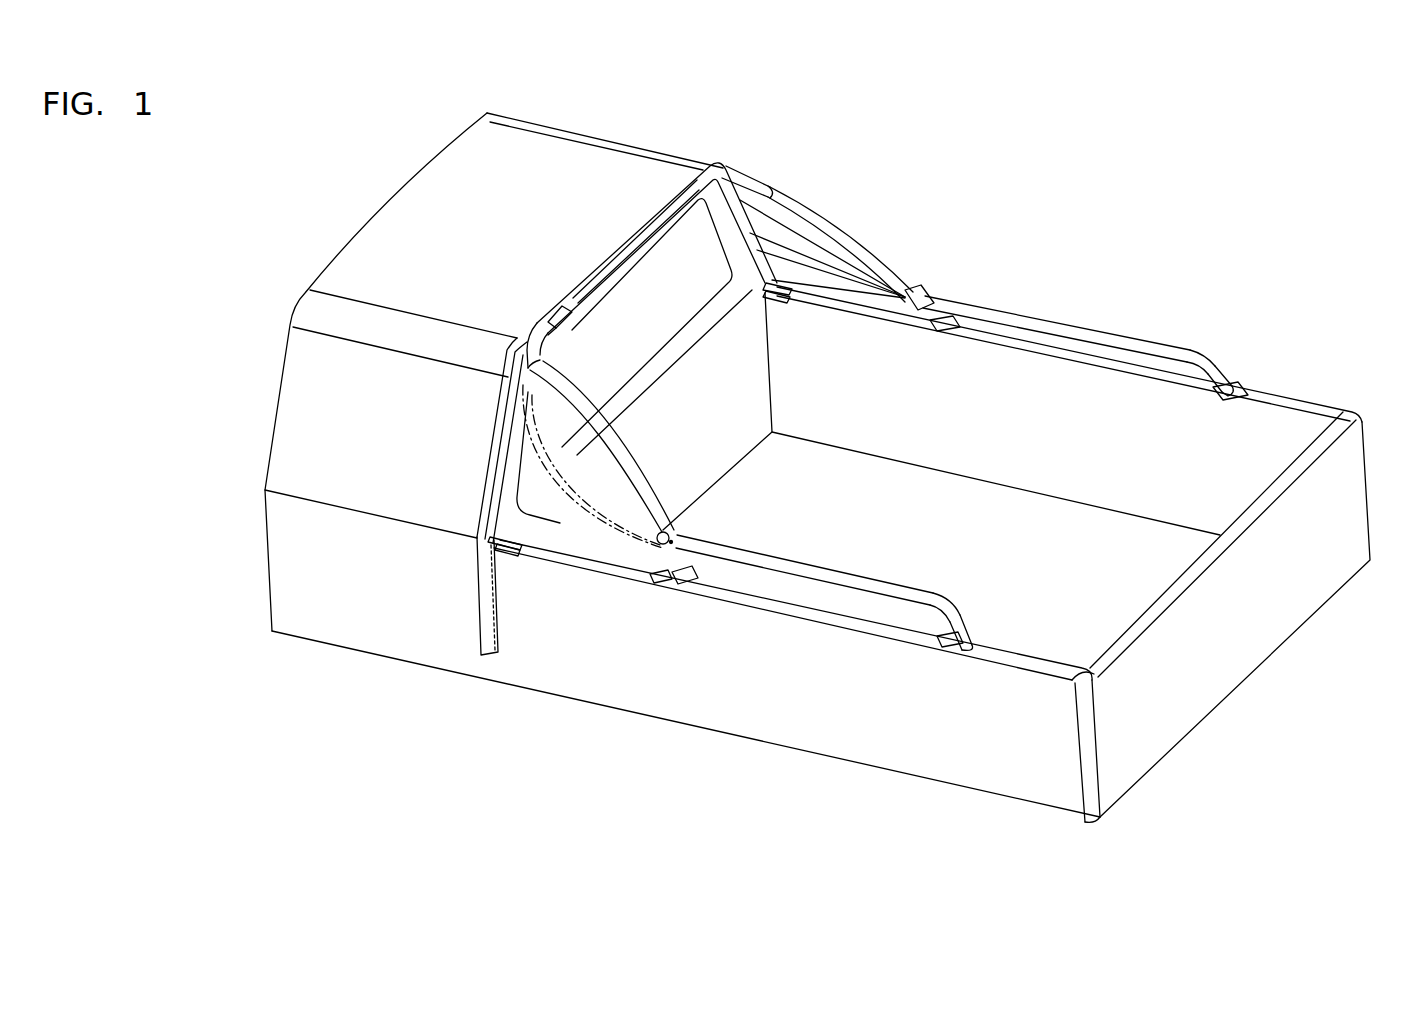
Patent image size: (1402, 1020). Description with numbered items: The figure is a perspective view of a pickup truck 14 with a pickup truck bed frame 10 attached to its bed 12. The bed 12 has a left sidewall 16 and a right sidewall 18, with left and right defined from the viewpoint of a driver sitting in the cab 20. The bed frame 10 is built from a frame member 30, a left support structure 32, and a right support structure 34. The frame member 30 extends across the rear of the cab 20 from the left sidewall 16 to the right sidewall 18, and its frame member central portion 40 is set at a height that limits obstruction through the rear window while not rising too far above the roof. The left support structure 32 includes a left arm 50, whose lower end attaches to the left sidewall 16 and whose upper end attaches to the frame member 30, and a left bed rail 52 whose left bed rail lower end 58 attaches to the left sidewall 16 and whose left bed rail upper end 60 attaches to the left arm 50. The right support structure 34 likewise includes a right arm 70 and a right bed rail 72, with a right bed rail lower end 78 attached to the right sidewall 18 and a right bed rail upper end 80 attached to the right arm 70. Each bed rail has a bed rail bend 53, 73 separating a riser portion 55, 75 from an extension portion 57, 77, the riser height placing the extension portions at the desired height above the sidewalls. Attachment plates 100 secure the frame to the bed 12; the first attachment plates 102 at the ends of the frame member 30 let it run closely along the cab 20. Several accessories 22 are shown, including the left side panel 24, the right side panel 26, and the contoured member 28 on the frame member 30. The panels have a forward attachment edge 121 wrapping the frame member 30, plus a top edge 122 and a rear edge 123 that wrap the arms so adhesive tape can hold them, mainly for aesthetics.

The pickup truck bed frame 10 is at (1023, 193).
The bed 12 is at (1335, 372).
The pickup truck 14 is at (578, 153).
The left sidewall 16 is at (990, 757).
The right sidewall 18 is at (1208, 459).
The cab 20 is at (465, 283).
The accessories 22 is at (672, 207).
The left side panel 24 is at (535, 507).
The right side panel 26 is at (753, 190).
The contoured member 28 is at (642, 233).
The frame member 30 is at (548, 330).
The left support structure 32 is at (941, 414).
The right support structure 34 is at (862, 320).
The frame member central portion 40 is at (550, 320).
The left arm 50 is at (642, 473).
The left bed rail 52 is at (798, 567).
The bed rail bend 53 is at (937, 595).
The riser portion 55 is at (950, 615).
The extension portion 57 is at (868, 585).
The left bed rail lower end 58 is at (967, 638).
The left bed rail upper end 60 is at (698, 540).
The right arm 70 is at (848, 242).
The right bed rail 72 is at (1037, 323).
The bed rail bend 73 is at (1190, 350).
The riser portion 75 is at (1207, 362).
The extension portion 77 is at (1100, 337).
The right bed rail lower end 78 is at (1222, 374).
The right bed rail upper end 80 is at (927, 297).
The attachment plates 100 is at (778, 290).
The first attachment plates 102 is at (763, 290).
The forward attachment edge 121 is at (496, 412).
The top edge 122 is at (550, 378).
The rear edge 123 is at (683, 578).